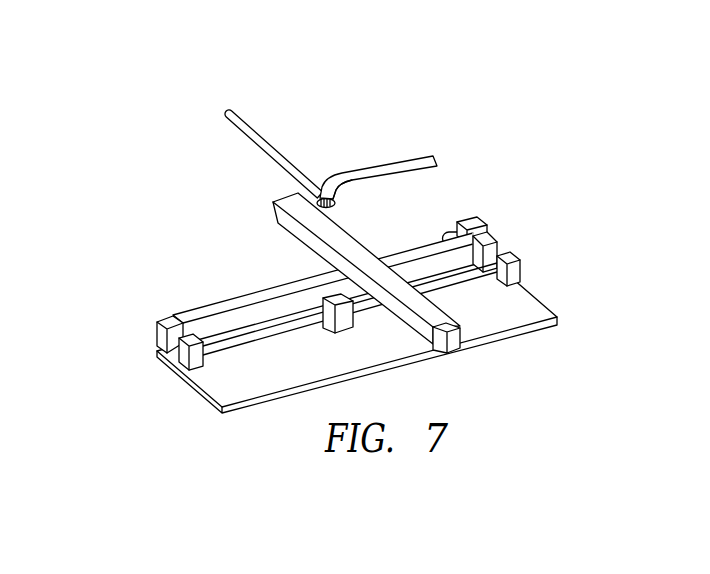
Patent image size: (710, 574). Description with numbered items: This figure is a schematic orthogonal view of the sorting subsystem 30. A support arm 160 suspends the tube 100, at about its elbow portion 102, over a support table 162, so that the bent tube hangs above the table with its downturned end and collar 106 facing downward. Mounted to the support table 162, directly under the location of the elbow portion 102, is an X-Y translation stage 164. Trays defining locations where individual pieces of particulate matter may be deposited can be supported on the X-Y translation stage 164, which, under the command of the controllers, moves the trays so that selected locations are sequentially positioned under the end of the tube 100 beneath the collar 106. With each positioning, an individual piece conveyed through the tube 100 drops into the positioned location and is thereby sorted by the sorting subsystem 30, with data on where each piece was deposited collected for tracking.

The sorting subsystem 30 is at (395, 269).
The tube 100 is at (410, 162).
The elbow portion 102 is at (349, 188).
The collar 106 is at (335, 204).
The support arm 160 is at (252, 126).
The support table 162 is at (552, 309).
The X-Y translation stage 164 is at (258, 273).